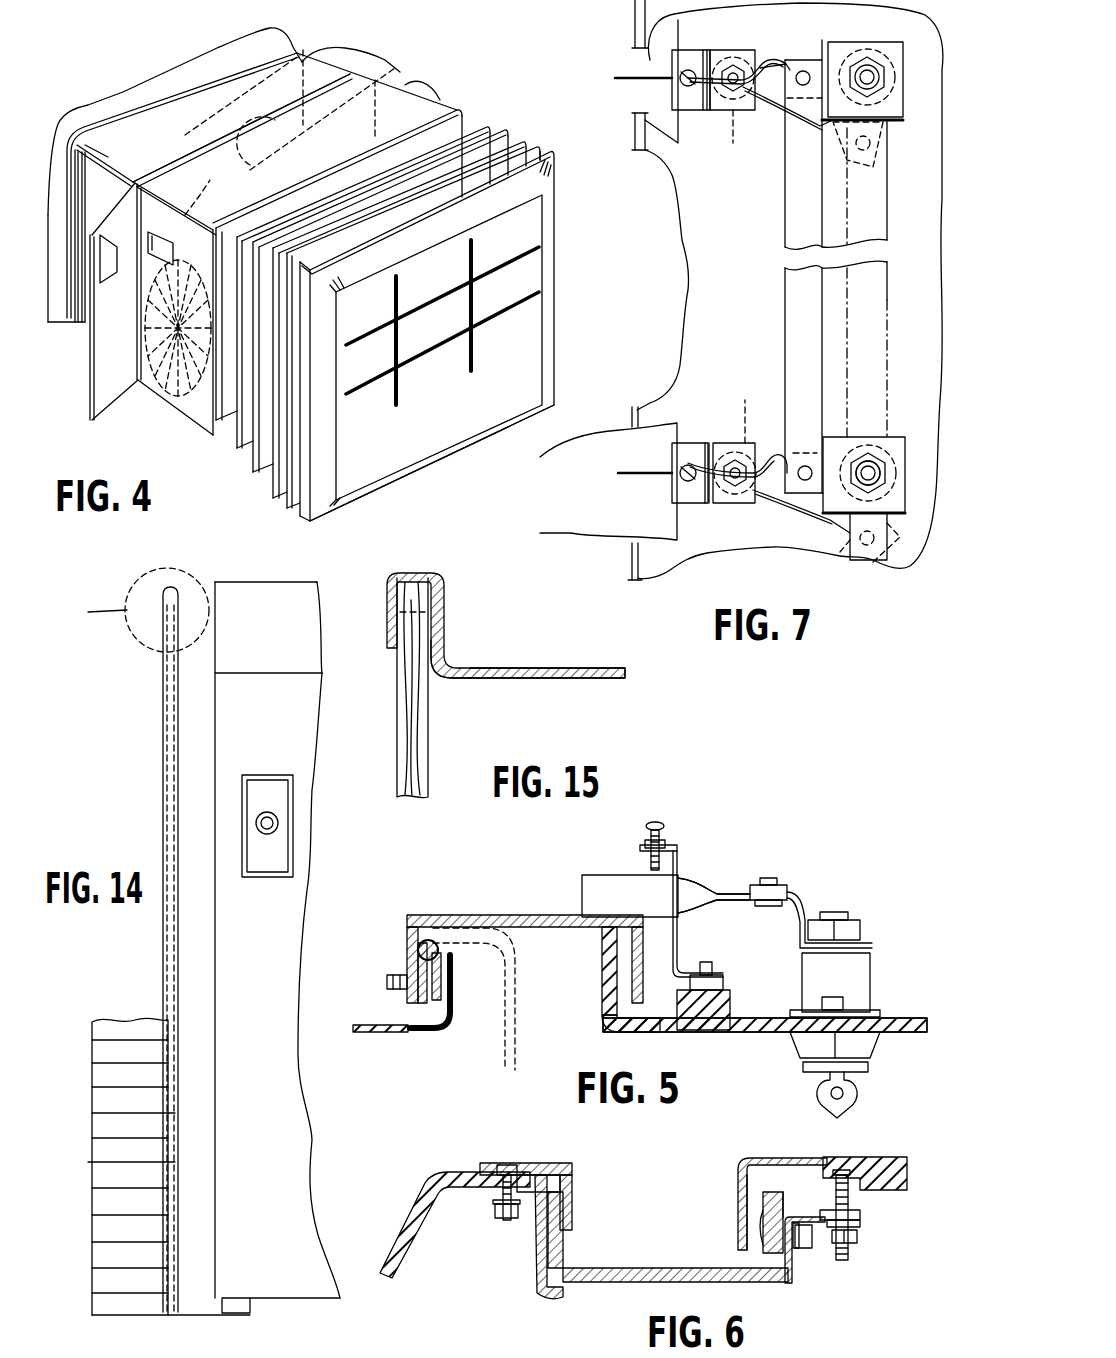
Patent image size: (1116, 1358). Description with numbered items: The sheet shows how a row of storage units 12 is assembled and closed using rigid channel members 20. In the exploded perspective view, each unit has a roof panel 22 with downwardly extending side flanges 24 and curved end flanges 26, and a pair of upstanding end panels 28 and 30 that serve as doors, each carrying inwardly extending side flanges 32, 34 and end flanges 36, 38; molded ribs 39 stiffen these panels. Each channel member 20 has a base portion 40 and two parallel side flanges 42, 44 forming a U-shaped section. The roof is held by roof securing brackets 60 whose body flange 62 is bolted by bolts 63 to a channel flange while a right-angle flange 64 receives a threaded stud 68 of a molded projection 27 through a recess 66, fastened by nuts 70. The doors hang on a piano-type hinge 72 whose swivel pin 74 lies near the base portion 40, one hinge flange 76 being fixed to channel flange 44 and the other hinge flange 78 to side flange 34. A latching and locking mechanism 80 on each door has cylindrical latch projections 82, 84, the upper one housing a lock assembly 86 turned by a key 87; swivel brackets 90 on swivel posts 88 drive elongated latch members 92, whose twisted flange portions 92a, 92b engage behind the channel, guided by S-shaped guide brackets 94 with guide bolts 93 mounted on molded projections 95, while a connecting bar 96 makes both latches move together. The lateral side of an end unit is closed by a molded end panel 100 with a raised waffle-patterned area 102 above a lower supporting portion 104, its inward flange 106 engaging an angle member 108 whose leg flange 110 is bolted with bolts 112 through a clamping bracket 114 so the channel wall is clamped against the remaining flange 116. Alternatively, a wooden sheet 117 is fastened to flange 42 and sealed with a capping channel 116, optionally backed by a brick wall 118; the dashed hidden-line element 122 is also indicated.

In FIG. 4, the storage unit 12 is at (287, 30).
In FIG. 4, the channel member 20 is at (499, 125).
In FIG. 7, the channel member 20 is at (672, 124).
In FIG. 14, the channel member 20 is at (200, 775).
In FIG. 6, the channel member 20 is at (610, 1286).
In FIG. 6, the roof panel 22 is at (775, 1157).
In FIG. 4, the side flange 24 is at (305, 190).
In FIG. 6, the side flange 24 is at (745, 1212).
In FIG. 4, the end flange 26 is at (115, 167).
In FIG. 14, the end flange 26 is at (268, 627).
In FIG. 6, the molded projection 27 is at (860, 1207).
In FIG. 4, the end panel 28 is at (148, 370).
In FIG. 7, the end panel 28 is at (790, 291).
In FIG. 14, the end panel 28 is at (216, 994).
In FIG. 5, the end panel 28 is at (893, 1033).
In FIG. 5, the end panel 30 is at (765, 1025).
In FIG. 4, the side flange 32 is at (90, 405).
In FIG. 5, the side flange 32 is at (602, 968).
In FIG. 4, the side flange 34 is at (212, 428).
In FIG. 5, the side flange 34 is at (452, 1012).
In FIG. 4, the end flange 36 is at (136, 384).
In FIG. 7, the end flange 36 is at (632, 575).
In FIG. 4, the end flange 38 is at (106, 216).
In FIG. 6, the rib 39 is at (900, 1190).
In FIG. 4, the base portion 40 is at (250, 462).
In FIG. 15, the base portion 40 is at (562, 678).
In FIG. 5, the base portion 40 is at (540, 928).
In FIG. 6, the base portion 40 is at (650, 1270).
In FIG. 4, the side flange 42 is at (256, 478).
In FIG. 15, the side flange 42 is at (444, 661).
In FIG. 5, the side flange 42 is at (640, 990).
In FIG. 6, the side flange 42 is at (763, 1195).
In FIG. 4, the side flange 44 is at (235, 446).
In FIG. 5, the side flange 44 is at (407, 930).
In FIG. 6, the side flange 44 is at (558, 1250).
In FIG. 6, the roof securing bracket 60 is at (790, 1288).
In FIG. 6, the body flange 62 is at (790, 1195).
In FIG. 6, the bolt 63 is at (800, 1252).
In FIG. 6, the flange 64 is at (812, 1232).
In FIG. 6, the recess 66 is at (865, 1226).
In FIG. 6, the threaded stud 68 is at (835, 1200).
In FIG. 6, the nut 70 is at (860, 1245).
In FIG. 5, the piano-type hinge 72 is at (427, 1010).
In FIG. 5, the swivel pin 74 is at (432, 944).
In FIG. 5, the hinge flange 76 is at (418, 972).
In FIG. 5, the hinge flange 78 is at (442, 966).
In FIG. 5, the latching and locking mechanism 80 is at (862, 882).
In FIG. 7, the latch projection 82 is at (904, 88).
In FIG. 5, the latch projection 82 is at (836, 982).
In FIG. 7, the latch projection 84 is at (906, 460).
In FIG. 14, the lock assembly 86 is at (265, 834).
In FIG. 5, the lock assembly 86 is at (805, 1045).
In FIG. 5, the key 87 is at (857, 1095).
In FIG. 7, the swivel post 88 is at (870, 66).
In FIG. 5, the swivel post 88 is at (848, 920).
In FIG. 7, the swivel bracket 90 is at (895, 125).
In FIG. 5, the swivel bracket 90 is at (806, 912).
In FIG. 7, the latch member 92 is at (770, 108).
In FIG. 5, the latch member 92 is at (706, 870).
In FIG. 7, the flange portion 92a is at (775, 62).
In FIG. 5, the flange portion 92a is at (738, 893).
In FIG. 7, the flange portion 92b is at (640, 75).
In FIG. 5, the flange portion 92b is at (649, 896).
In FIG. 7, the guide bolt 93 is at (688, 70).
In FIG. 5, the guide bolt 93 is at (665, 832).
In FIG. 7, the guide bracket 94 is at (735, 58).
In FIG. 5, the guide bracket 94 is at (680, 945).
In FIG. 7, the molded projection 95 is at (740, 276).
In FIG. 5, the molded projection 95 is at (730, 1003).
In FIG. 7, the connecting bar 96 is at (792, 320).
In FIG. 5, the connecting bar 96 is at (786, 888).
In FIG. 4, the end panel 100 is at (454, 337).
In FIG. 4, the raised molded area 102 is at (442, 322).
In FIG. 4, the lower supporting portion 104 is at (432, 463).
In FIG. 4, the inwardly extending flange 106 is at (340, 255).
In FIG. 6, the inwardly extending flange 106 is at (462, 1188).
In FIG. 4, the angle member 108 is at (279, 497).
In FIG. 6, the angle member 108 is at (580, 1172).
In FIG. 6, the leg flange 110 is at (550, 1163).
In FIG. 6, the bolt 112 is at (507, 1163).
In FIG. 6, the clamping bracket 114 is at (537, 1237).
In FIG. 14, the capping channel 116 is at (168, 583).
In FIG. 15, the capping channel 116 is at (422, 572).
In FIG. 6, the capping channel 116 is at (573, 1202).
In FIG. 14, the wooden sheet 117 is at (170, 697).
In FIG. 15, the wooden sheet 117 is at (420, 727).
In FIG. 14, the brick wall 118 is at (100, 1127).
In FIG. 4, the hidden edge 122 is at (262, 84).